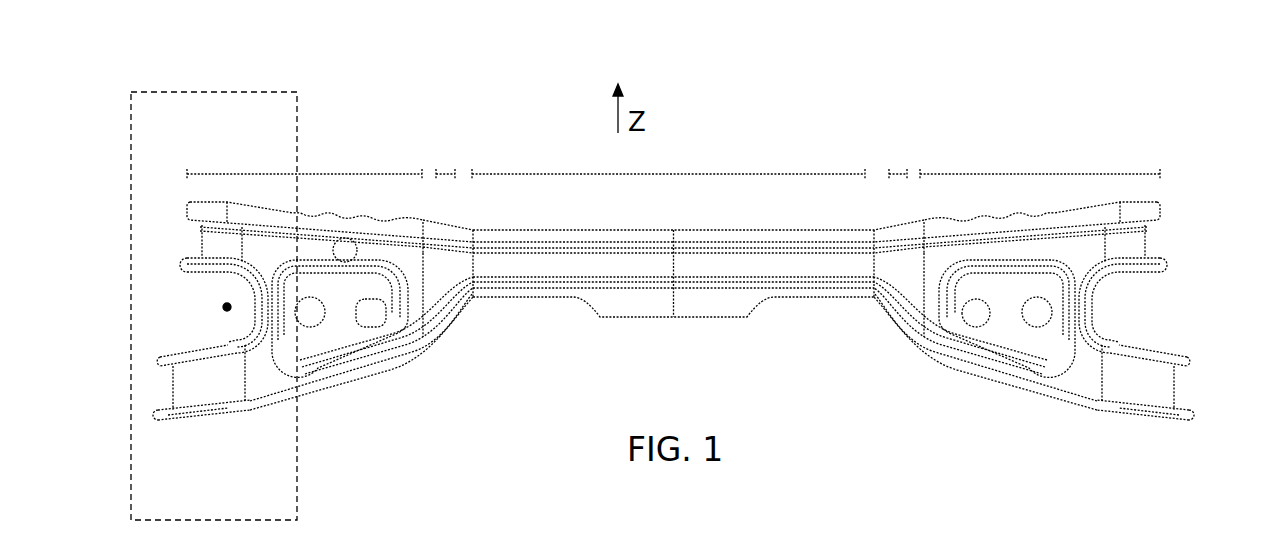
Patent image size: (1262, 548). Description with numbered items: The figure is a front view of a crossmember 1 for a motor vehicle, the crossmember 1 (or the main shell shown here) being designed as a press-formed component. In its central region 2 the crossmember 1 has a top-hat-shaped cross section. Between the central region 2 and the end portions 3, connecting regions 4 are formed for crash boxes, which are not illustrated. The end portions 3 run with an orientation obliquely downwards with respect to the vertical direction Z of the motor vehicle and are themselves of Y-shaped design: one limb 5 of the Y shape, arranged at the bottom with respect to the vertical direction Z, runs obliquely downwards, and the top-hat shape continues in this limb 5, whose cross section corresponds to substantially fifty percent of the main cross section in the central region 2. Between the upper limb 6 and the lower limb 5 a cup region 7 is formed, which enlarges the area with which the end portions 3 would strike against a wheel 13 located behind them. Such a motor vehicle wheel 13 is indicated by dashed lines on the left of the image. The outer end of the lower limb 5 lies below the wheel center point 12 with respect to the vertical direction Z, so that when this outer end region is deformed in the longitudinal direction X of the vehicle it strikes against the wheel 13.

The crossmember 1 is at (338, 90).
The central region 2 is at (682, 173).
The end portions 3 is at (263, 173).
The connecting regions 4 is at (455, 172).
The limb 5 is at (318, 370).
The upper limb 6 is at (312, 252).
The cup region 7 is at (287, 337).
The wheel center point 12 is at (223, 305).
The wheel 13 is at (131, 101).